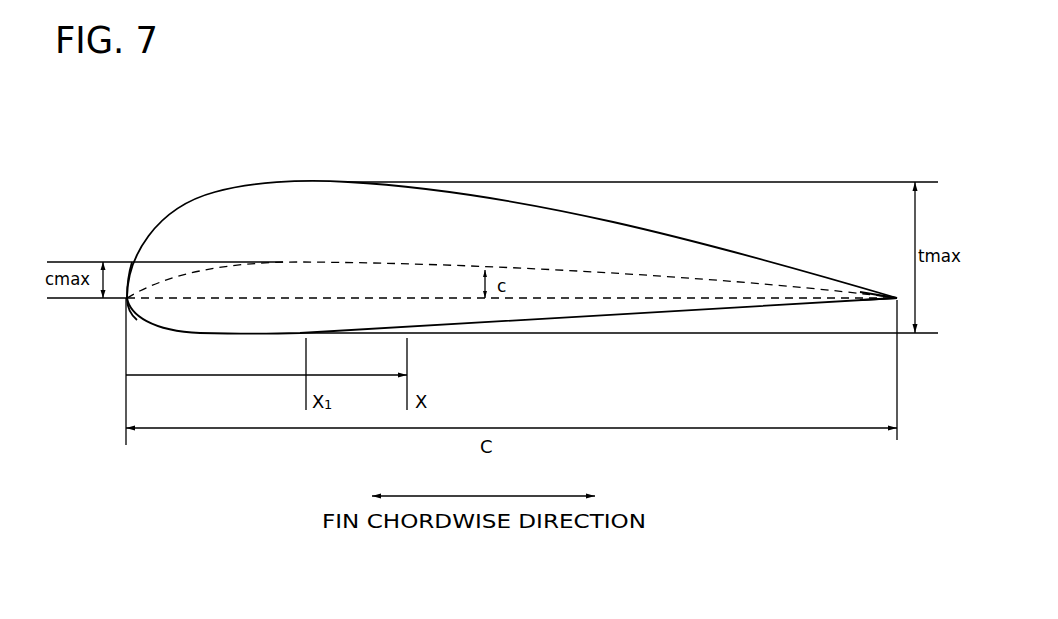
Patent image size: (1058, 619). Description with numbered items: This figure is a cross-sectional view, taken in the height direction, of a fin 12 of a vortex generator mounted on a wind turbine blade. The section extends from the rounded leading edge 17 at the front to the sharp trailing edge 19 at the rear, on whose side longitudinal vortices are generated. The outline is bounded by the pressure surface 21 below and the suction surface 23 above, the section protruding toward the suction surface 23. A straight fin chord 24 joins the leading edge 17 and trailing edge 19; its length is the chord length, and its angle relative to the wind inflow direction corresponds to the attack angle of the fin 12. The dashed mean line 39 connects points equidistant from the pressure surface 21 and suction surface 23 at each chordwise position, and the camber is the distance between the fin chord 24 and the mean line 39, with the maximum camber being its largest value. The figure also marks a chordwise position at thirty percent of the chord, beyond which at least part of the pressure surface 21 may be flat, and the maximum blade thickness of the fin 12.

The fin 12 is at (481, 244).
The leading edge 17 is at (126, 300).
The trailing edge 19 is at (903, 293).
The pressure surface 21 is at (687, 318).
The suction surface 23 is at (640, 228).
The fin chord 24 is at (598, 299).
The mean line 39 is at (532, 272).